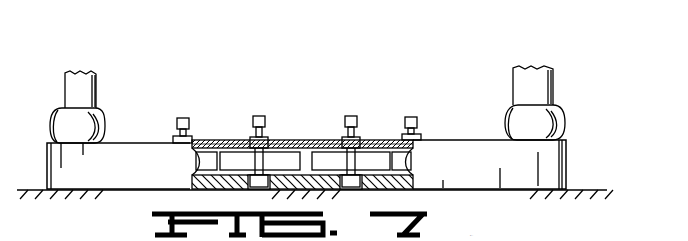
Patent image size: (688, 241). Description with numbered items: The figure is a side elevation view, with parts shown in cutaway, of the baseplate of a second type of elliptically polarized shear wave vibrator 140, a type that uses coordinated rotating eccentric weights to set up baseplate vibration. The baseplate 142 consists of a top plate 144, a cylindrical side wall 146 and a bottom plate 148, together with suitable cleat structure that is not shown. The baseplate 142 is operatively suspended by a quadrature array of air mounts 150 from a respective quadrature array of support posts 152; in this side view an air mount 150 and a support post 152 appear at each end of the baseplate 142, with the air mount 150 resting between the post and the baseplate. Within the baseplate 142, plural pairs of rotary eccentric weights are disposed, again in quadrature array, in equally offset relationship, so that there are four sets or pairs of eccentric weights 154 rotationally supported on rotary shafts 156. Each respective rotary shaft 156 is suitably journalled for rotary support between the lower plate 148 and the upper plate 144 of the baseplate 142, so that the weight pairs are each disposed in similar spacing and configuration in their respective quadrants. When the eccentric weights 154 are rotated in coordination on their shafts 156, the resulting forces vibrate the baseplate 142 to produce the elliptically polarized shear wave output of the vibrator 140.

The elliptically polarized shear wave vibrator 140 is at (432, 64).
The baseplate 142 is at (530, 163).
The top plate 144 is at (435, 140).
The cylindrical side wall 146 is at (567, 157).
The bottom plate 148 is at (408, 173).
The air mount 150 is at (85, 122).
The support post 152 is at (85, 83).
The eccentric weight 154 is at (203, 155).
The rotary shaft 156 is at (262, 137).